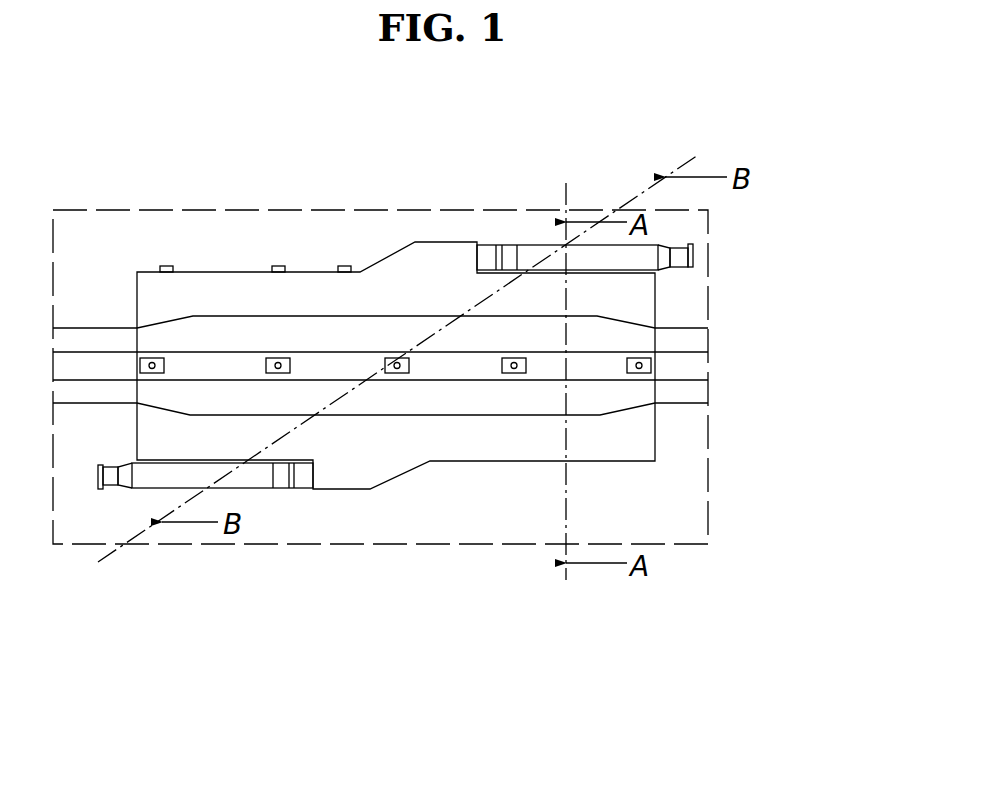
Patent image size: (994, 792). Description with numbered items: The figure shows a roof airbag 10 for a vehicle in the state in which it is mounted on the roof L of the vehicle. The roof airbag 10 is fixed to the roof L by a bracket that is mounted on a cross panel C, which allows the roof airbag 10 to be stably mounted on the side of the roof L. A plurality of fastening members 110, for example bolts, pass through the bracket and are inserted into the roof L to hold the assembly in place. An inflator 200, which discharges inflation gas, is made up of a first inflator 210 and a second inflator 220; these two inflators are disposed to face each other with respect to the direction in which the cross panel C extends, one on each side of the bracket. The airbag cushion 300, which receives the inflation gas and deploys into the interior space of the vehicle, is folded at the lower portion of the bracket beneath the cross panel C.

The roof airbag 10 is at (227, 266).
The fastening members 110 is at (400, 372).
The inflator 200 is at (443, 410).
The first inflator 210 is at (253, 478).
The second inflator 220 is at (535, 253).
The airbag cushion 300 is at (330, 292).
The cross panel C is at (673, 370).
The roof L is at (475, 503).